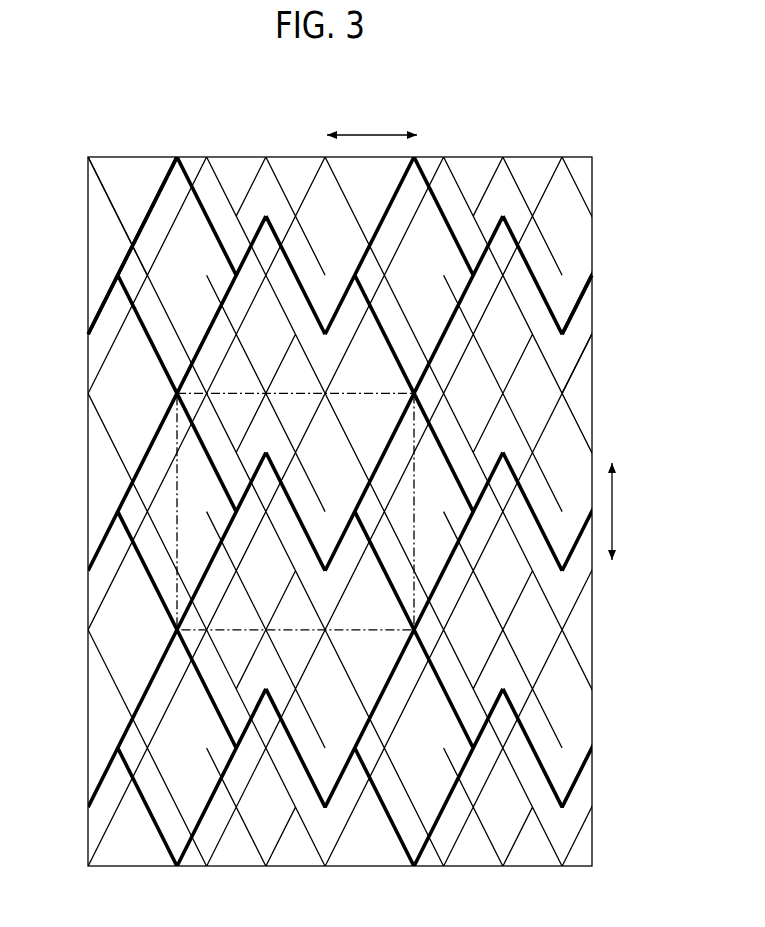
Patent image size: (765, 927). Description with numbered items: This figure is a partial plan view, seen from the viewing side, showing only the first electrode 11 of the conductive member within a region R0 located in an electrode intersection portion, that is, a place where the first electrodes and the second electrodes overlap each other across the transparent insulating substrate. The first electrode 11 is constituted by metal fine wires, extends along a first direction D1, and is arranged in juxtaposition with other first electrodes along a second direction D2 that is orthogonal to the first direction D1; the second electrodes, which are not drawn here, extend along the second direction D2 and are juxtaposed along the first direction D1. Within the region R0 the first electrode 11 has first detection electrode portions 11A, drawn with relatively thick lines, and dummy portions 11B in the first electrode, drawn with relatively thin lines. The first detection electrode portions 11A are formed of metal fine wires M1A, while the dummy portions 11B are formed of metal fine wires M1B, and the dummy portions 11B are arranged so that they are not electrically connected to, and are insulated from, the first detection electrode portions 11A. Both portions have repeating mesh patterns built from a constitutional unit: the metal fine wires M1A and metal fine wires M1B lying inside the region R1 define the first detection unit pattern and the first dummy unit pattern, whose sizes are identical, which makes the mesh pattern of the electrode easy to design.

The first electrode 11 is at (594, 171).
The first detection electrode portion 11A is at (160, 186).
The dummy portion in the first electrode 11B is at (110, 200).
The region R0 is at (595, 232).
The region R1 is at (177, 434).
The metal fine wire M1A is at (586, 298).
The metal fine wire M1B is at (584, 354).
The first direction D1 is at (372, 118).
The second direction D2 is at (634, 511).